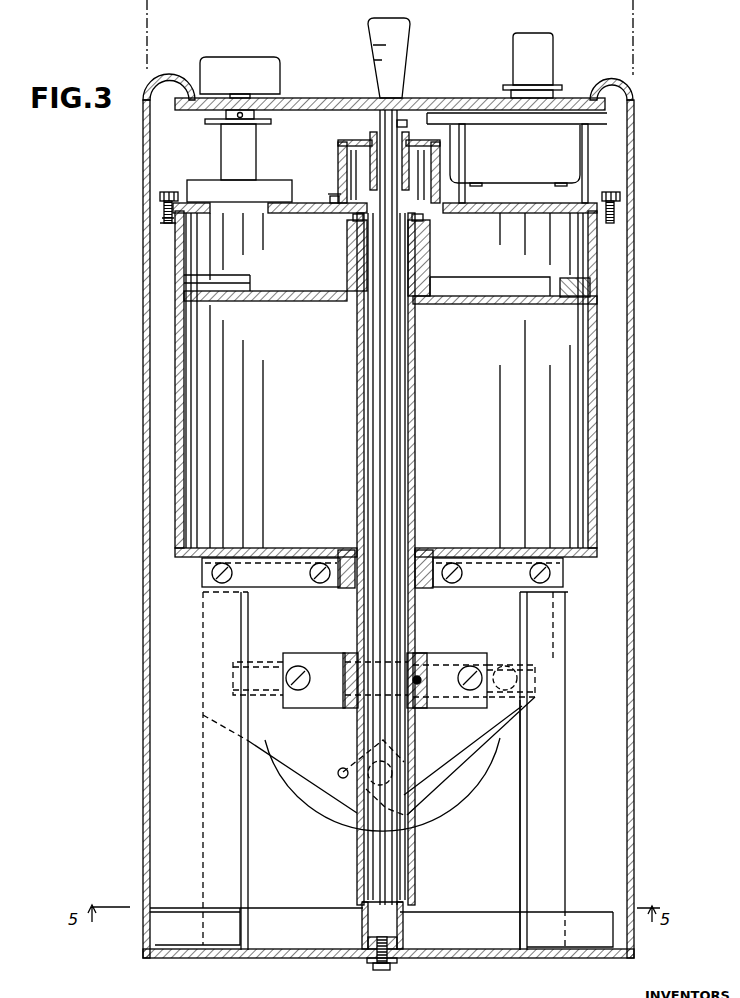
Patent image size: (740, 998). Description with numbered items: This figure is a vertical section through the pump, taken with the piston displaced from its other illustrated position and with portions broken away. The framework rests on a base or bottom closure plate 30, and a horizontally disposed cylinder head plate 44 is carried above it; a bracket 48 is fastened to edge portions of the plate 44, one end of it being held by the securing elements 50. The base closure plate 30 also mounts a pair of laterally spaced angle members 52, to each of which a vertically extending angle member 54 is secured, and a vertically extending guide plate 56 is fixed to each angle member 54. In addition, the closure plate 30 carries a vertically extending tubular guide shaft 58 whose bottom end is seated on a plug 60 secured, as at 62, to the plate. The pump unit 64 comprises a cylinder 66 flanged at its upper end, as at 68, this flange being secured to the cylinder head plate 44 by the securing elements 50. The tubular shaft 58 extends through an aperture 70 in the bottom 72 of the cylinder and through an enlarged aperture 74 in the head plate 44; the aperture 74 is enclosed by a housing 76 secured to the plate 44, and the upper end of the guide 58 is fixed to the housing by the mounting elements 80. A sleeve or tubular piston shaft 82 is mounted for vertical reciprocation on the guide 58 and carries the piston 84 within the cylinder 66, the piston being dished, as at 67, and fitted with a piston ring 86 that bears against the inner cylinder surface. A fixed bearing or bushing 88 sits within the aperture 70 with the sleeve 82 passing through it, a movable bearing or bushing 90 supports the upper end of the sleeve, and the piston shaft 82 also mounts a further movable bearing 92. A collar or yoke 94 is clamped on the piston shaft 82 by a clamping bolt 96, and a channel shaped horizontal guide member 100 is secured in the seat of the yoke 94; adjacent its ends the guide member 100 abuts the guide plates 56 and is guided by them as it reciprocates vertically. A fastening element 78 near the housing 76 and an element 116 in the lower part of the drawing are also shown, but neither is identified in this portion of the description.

The base or bottom closure plate 30 is at (298, 958).
The cylinder head plate 44 is at (520, 206).
The bracket 48 is at (410, 112).
The securing elements 50 is at (172, 192).
The angle members 52 is at (173, 918).
The angle member 54 is at (204, 786).
The guide plate 56 is at (245, 866).
The tubular guide shaft 58 is at (365, 906).
The plug 60 is at (400, 941).
The securing means for plug 62 is at (386, 970).
The pump unit 64 is at (144, 392).
The cylinder 66 is at (181, 412).
The dished portion of piston 67 is at (528, 283).
The flange 68 is at (172, 224).
The aperture 70 is at (349, 552).
The bottom of the cylinder 72 is at (272, 556).
The enlarged aperture 74 is at (346, 212).
The housing 76 is at (333, 165).
The screw 78 is at (333, 196).
The mounting elements 80 is at (396, 126).
The sleeve or tubular piston shaft 82 is at (416, 414).
The piston 84 is at (302, 306).
The piston ring 86 is at (572, 302).
The fixed bearing or bushing 88 is at (420, 549).
The movable bearing or bushing 90 is at (420, 241).
The movable bearing 92 is at (357, 710).
The collar or yoke 94 is at (467, 654).
The clamping bolt 96 is at (420, 678).
The channel shaped horizontal guide member 100 is at (262, 666).
The cam arm 116 is at (308, 781).